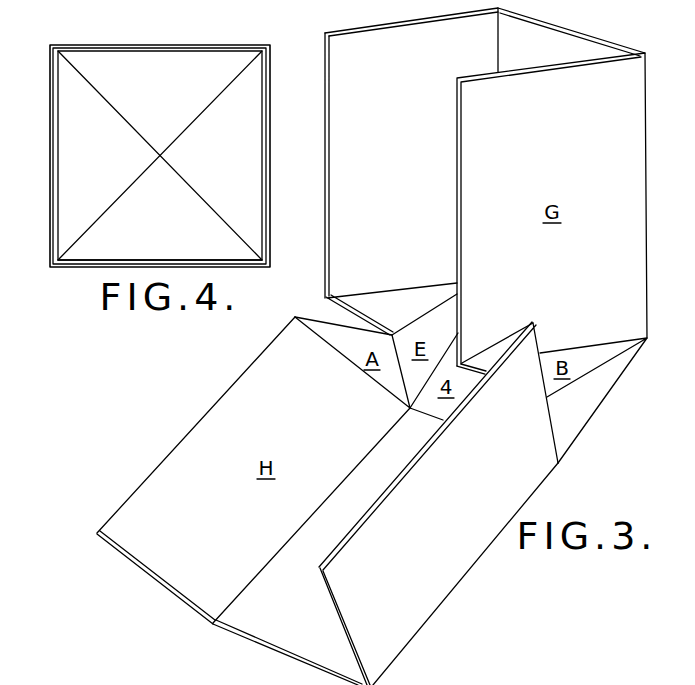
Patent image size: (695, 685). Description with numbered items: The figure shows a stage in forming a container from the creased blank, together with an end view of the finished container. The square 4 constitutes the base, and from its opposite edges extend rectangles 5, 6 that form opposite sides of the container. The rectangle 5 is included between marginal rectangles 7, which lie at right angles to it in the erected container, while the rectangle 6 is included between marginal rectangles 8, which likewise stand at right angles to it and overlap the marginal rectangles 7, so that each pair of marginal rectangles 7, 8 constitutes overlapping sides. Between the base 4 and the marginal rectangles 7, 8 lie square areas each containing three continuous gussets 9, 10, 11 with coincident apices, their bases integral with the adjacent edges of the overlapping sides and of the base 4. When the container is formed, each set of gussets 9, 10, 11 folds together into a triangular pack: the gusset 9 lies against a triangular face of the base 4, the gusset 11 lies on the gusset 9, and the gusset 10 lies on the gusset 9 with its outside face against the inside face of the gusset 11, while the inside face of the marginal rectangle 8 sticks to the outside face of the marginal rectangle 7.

In FIG. 4, the square 4 is at (128, 65).
In FIG. 3, the square 4 is at (311, 470).
In FIG. 4, the rectangle 5 is at (170, 43).
In FIG. 3, the rectangle 5 is at (505, 40).
In FIG. 4, the rectangle 6 is at (217, 260).
In FIG. 3, the rectangle 6 is at (291, 627).
In FIG. 4, the marginal rectangles 7 is at (60, 132).
In FIG. 3, the marginal rectangles 7 is at (358, 133).
In FIG. 4, the marginal rectangles 8 is at (53, 142).
In FIG. 3, the marginal rectangles 8 is at (235, 418).
In FIG. 3, the gusset 9 is at (585, 403).
In FIG. 4, the gusset 10 is at (85, 172).
In FIG. 3, the gusset 10 is at (387, 310).
In FIG. 3, the gusset 11 is at (338, 340).